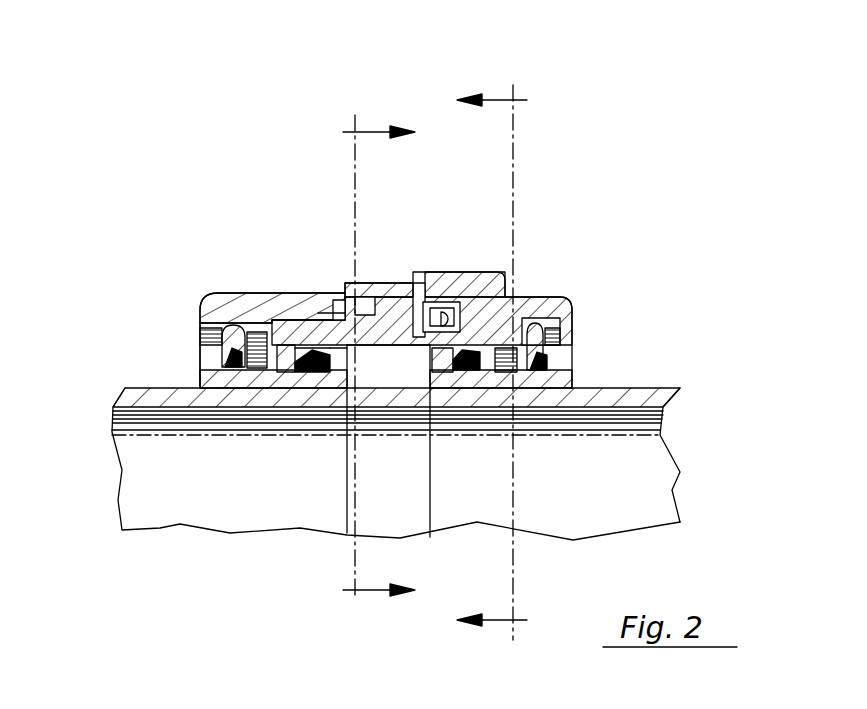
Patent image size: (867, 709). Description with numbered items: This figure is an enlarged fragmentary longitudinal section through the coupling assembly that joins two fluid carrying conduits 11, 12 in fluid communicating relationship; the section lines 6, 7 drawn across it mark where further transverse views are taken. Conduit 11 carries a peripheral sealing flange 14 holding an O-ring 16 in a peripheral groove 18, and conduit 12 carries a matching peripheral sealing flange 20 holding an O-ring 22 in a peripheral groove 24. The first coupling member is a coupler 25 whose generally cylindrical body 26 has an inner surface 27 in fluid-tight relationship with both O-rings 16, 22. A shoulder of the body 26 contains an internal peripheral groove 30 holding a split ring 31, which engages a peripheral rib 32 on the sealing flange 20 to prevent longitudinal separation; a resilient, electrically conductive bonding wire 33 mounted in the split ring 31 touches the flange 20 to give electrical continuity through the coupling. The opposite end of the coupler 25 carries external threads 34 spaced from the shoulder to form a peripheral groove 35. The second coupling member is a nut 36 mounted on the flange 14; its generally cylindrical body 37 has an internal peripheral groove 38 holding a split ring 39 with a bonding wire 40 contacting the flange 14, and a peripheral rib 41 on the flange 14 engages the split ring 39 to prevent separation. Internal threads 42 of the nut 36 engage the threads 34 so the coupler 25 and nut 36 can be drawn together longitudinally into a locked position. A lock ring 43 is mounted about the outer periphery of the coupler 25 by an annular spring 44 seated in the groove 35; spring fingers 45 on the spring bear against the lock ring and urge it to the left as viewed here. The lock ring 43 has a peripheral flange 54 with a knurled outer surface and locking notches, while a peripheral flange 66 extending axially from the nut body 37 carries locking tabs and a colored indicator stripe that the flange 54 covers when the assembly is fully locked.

The section line 6- 6 is at (492, 365).
The section line 7- 7 is at (379, 366).
The conduit 11 is at (125, 471).
The conduit 12 is at (662, 472).
The peripheral sealing flange 14 is at (210, 382).
The O-ring 16 is at (313, 390).
The peripheral groove 18 is at (320, 352).
The peripheral sealing flange 20 is at (565, 380).
The O-ring 22 is at (468, 360).
The peripheral groove 24 is at (447, 365).
The coupler 25 is at (585, 278).
The generally cylindrical body 26 is at (393, 347).
The inner surface 27 is at (390, 350).
The internal peripheral groove 30 is at (562, 320).
The split ring 31 is at (560, 335).
The peripheral rib 32 is at (506, 355).
The bonding wire 33 is at (540, 352).
The external threads 34 is at (340, 300).
The peripheral groove 35 is at (438, 318).
The nut 36 is at (190, 272).
The generally cylindrical body 37 is at (238, 293).
The internal peripheral groove 38 is at (228, 328).
The split ring 39 is at (222, 338).
The bonding wire 40 is at (234, 368).
The peripheral rib 41 is at (300, 370).
The internal threads 42 is at (303, 325).
The lock ring 43 is at (455, 205).
The annular spring 44 is at (403, 300).
The spring fingers 45 is at (455, 308).
The peripheral flange 54 is at (508, 272).
The peripheral flange 66 is at (318, 313).